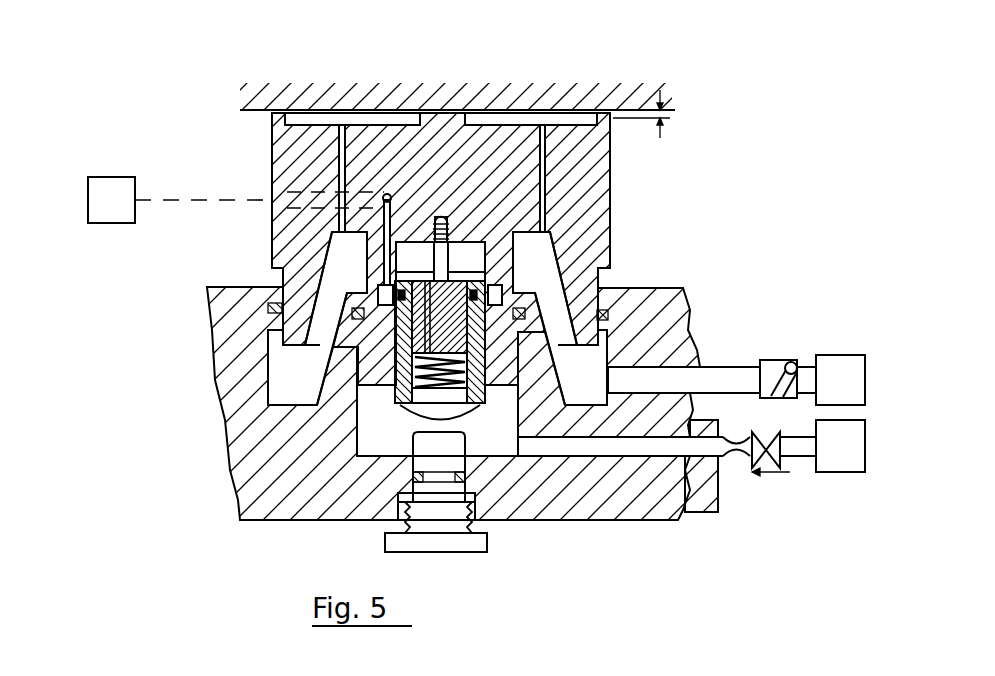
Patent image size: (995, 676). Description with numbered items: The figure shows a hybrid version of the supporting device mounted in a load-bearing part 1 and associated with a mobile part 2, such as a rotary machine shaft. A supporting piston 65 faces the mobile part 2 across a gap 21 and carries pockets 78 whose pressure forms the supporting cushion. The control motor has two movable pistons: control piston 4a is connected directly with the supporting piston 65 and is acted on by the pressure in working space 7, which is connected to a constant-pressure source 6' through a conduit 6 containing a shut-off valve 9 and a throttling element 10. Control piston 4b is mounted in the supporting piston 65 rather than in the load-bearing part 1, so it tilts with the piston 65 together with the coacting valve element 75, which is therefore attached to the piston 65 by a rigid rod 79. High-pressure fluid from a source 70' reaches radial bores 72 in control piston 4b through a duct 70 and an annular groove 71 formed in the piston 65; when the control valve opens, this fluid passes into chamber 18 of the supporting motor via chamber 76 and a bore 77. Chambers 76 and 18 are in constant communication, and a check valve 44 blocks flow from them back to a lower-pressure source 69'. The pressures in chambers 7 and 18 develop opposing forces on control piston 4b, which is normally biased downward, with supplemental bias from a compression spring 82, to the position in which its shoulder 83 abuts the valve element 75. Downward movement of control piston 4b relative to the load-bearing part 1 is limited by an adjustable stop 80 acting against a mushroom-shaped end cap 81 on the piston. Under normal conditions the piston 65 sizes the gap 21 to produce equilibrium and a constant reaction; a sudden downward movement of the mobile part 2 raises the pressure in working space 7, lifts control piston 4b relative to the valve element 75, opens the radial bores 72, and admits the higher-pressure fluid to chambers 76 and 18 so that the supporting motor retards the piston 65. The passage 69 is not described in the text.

The load-bearing part 1 is at (683, 512).
The mobile part 2 is at (572, 104).
The control piston 4a is at (370, 368).
The control piston 4b is at (397, 402).
The conduit 6 is at (667, 480).
The source of hydraulic fluid at constant pressure 6' is at (838, 483).
The working space 7 is at (497, 452).
The shut-off valve 9 is at (765, 432).
The throttling element 10 is at (735, 437).
The chamber 18 is at (596, 390).
The gap 21 is at (643, 130).
The check valve 44 is at (782, 361).
The supporting piston 65 is at (612, 186).
The pressure passage 69 is at (684, 351).
The source 69' is at (849, 343).
The duct 70 is at (307, 232).
The source 70' is at (158, 229).
The annular groove 71 is at (378, 295).
The radial bores 72 is at (397, 282).
The valve element 75 is at (466, 257).
The chamber 76 is at (430, 269).
The bore 77 is at (490, 250).
The pockets 78 is at (477, 121).
The rod 79 is at (446, 226).
The adjustable stop 80 is at (437, 462).
The mushroom-shaped end cap 81 is at (430, 412).
The compression spring 82 is at (480, 396).
The shoulder 83 is at (482, 279).